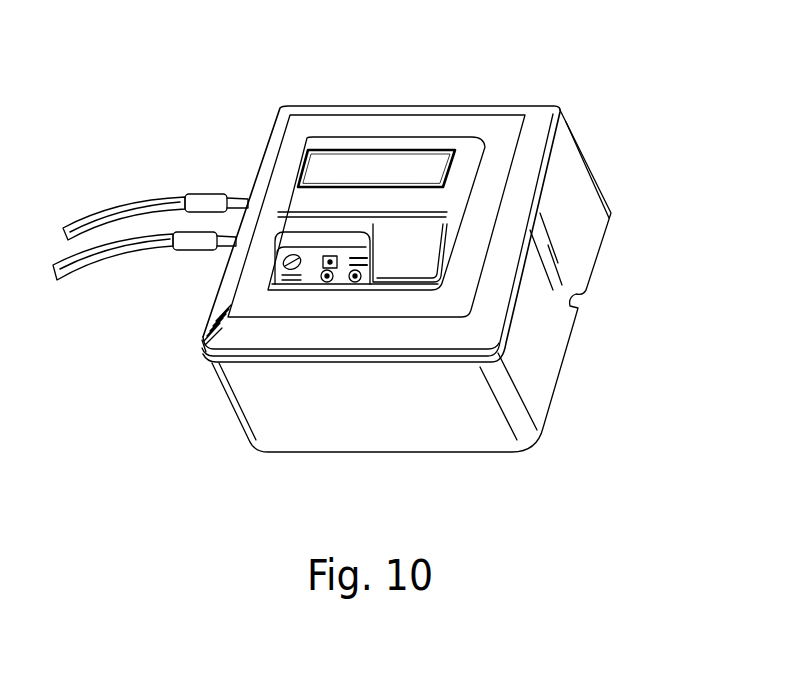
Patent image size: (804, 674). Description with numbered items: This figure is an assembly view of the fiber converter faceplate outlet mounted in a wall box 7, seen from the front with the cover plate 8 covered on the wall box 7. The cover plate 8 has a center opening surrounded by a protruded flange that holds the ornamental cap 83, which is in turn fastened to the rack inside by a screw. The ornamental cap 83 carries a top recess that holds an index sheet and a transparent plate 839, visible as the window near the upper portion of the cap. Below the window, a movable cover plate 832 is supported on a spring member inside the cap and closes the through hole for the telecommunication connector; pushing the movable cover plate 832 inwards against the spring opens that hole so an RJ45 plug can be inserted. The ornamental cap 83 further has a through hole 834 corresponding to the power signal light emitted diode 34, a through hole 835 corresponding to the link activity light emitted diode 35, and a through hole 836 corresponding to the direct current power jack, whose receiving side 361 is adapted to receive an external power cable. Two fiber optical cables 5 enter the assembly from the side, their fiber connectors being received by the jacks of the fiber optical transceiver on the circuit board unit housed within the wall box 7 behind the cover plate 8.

The fiber optical cables 5 is at (97, 203).
The wall box 7 is at (558, 412).
The cover plate 8 is at (490, 100).
The ornamental cap 83 is at (386, 137).
The transparent plate 839 is at (331, 165).
The movable cover plate 832 is at (417, 257).
The through hole 836 is at (282, 264).
The power signal light emitted diode 34 is at (323, 282).
The through hole 834 is at (331, 282).
The link activity light emitted diode 35 is at (354, 282).
The through hole 835 is at (361, 281).
The receiving side 361 is at (204, 350).